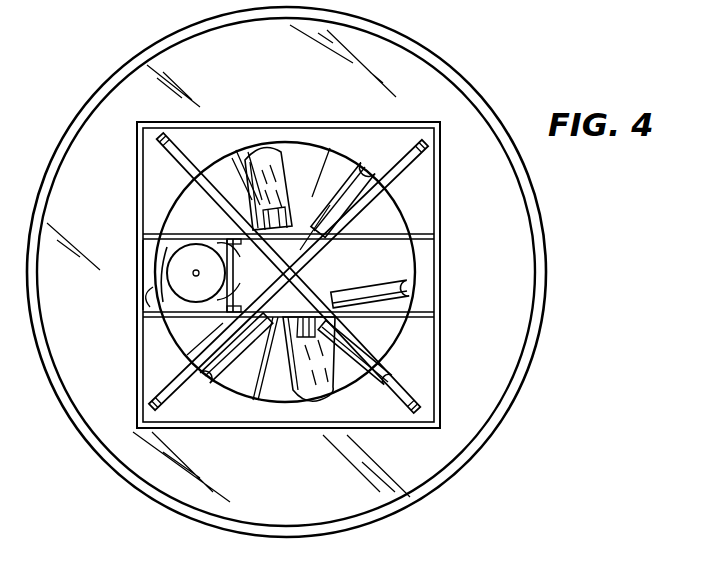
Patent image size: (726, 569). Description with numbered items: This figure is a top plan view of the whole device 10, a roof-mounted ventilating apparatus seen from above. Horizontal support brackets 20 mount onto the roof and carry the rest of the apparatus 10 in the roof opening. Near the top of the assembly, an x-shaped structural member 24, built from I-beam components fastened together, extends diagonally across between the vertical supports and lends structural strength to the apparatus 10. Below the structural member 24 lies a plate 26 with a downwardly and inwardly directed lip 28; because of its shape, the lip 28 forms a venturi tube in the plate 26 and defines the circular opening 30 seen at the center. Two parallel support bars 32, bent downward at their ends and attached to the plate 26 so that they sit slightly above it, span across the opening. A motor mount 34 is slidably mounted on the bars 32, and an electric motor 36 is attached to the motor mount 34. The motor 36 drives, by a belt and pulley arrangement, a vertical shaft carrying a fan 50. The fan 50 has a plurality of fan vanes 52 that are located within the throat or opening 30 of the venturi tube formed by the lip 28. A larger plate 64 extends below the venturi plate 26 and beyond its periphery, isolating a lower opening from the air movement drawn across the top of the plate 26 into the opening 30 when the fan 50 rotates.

The device 10 is at (490, 26).
The horizontal support brackets 20 is at (386, 167).
The x-shaped structural member 24 is at (427, 171).
The plate 26 is at (426, 212).
The lip 28 is at (410, 275).
The opening 30 is at (430, 238).
The support bars 32 is at (138, 290).
The motor mount 34 is at (177, 213).
The electric motor 36 is at (186, 282).
The fan 50 is at (293, 174).
The fan vanes 52 is at (255, 155).
The plate 64 is at (515, 301).